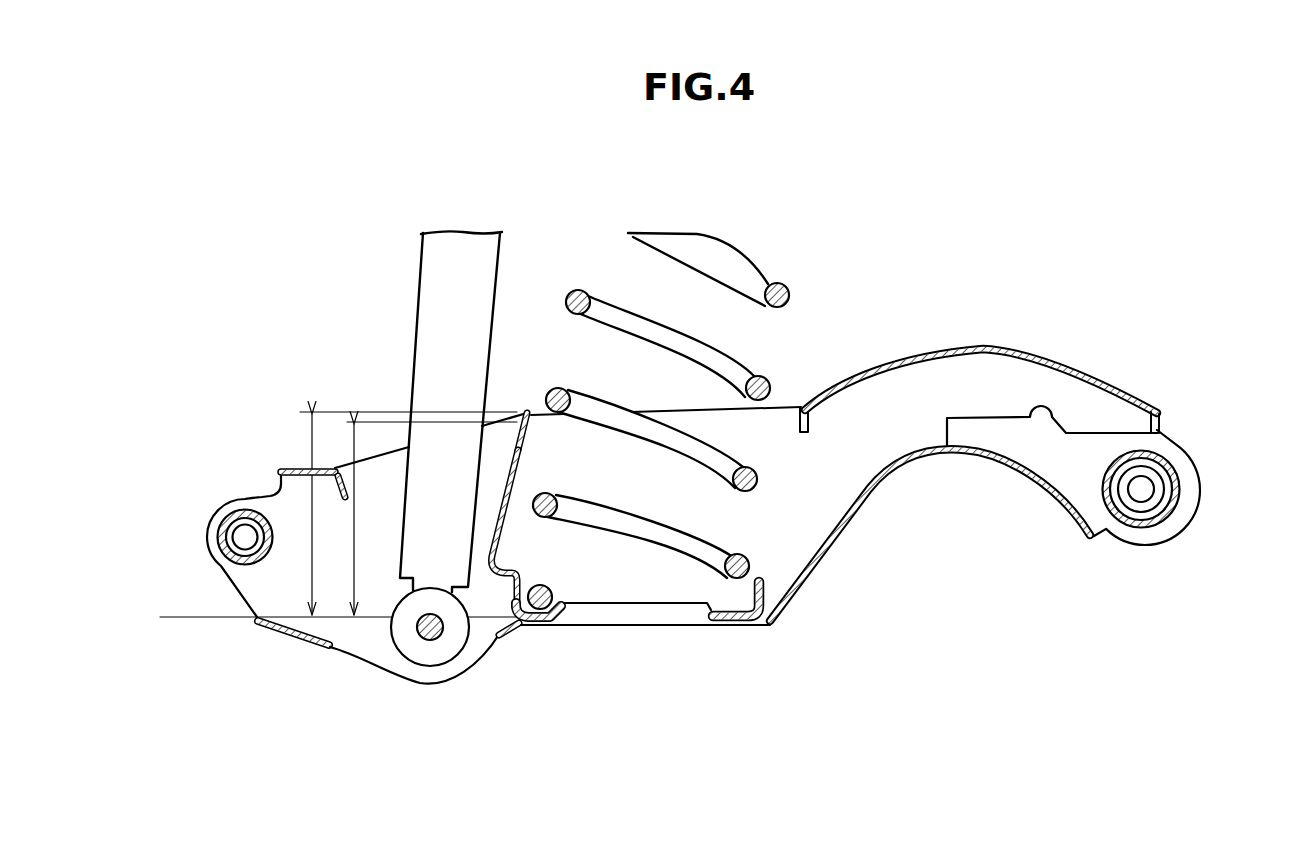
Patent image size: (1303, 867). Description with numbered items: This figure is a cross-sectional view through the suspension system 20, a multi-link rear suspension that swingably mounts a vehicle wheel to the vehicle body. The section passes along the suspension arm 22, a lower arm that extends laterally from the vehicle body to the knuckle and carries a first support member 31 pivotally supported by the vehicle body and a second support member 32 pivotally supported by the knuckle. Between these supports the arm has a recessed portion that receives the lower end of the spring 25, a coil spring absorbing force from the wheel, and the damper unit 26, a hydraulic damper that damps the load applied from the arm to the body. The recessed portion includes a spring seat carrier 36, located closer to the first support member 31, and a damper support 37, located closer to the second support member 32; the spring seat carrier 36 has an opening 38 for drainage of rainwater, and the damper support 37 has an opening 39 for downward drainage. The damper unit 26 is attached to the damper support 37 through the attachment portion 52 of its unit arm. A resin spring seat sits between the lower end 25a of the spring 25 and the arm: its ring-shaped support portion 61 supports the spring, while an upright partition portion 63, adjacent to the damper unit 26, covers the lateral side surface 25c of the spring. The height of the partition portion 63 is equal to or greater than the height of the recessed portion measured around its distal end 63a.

The suspension system 20 is at (307, 120).
The suspension arm 22 is at (977, 343).
The spring 25 is at (743, 250).
The lower end of the spring 25a is at (550, 620).
The lateral side surface 25c is at (522, 496).
The damper unit 26 is at (421, 320).
The first support member 31 is at (1163, 460).
The second support member 32 is at (232, 508).
The spring seat carrier 36 is at (790, 590).
The damper support 37 is at (424, 643).
The opening 38 is at (708, 596).
The opening 39 is at (343, 648).
The attachment portion 52 is at (438, 652).
The support portion 61 is at (748, 600).
The partition portion 63 is at (530, 445).
The distal end of the partition portion 63a is at (527, 410).